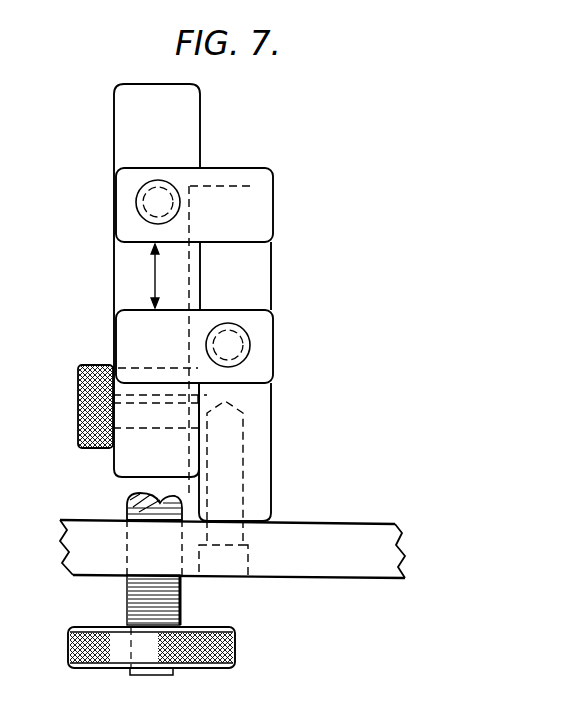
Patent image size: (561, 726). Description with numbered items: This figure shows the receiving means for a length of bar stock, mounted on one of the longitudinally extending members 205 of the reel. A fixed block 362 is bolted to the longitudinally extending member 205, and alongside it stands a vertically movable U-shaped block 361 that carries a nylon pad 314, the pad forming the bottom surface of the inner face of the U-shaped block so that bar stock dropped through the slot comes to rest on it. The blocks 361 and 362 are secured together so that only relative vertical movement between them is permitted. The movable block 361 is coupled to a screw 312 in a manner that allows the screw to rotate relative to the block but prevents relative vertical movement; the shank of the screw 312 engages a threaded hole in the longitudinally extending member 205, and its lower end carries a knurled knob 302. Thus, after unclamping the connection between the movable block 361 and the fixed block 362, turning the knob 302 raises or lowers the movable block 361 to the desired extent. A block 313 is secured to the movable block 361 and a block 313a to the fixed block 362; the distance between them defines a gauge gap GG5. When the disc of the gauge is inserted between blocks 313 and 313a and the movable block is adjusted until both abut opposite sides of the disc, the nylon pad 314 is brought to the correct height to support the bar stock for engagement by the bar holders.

The movable block 361 is at (133, 130).
The fixed block 362 is at (253, 273).
The block 313 is at (250, 188).
The block 313a is at (258, 352).
The gauge gap GG5 is at (150, 272).
The nylon pad 314 is at (90, 387).
The longitudinally extending member 205 is at (283, 560).
The screw 312 is at (133, 602).
The knurled knob 302 is at (217, 650).